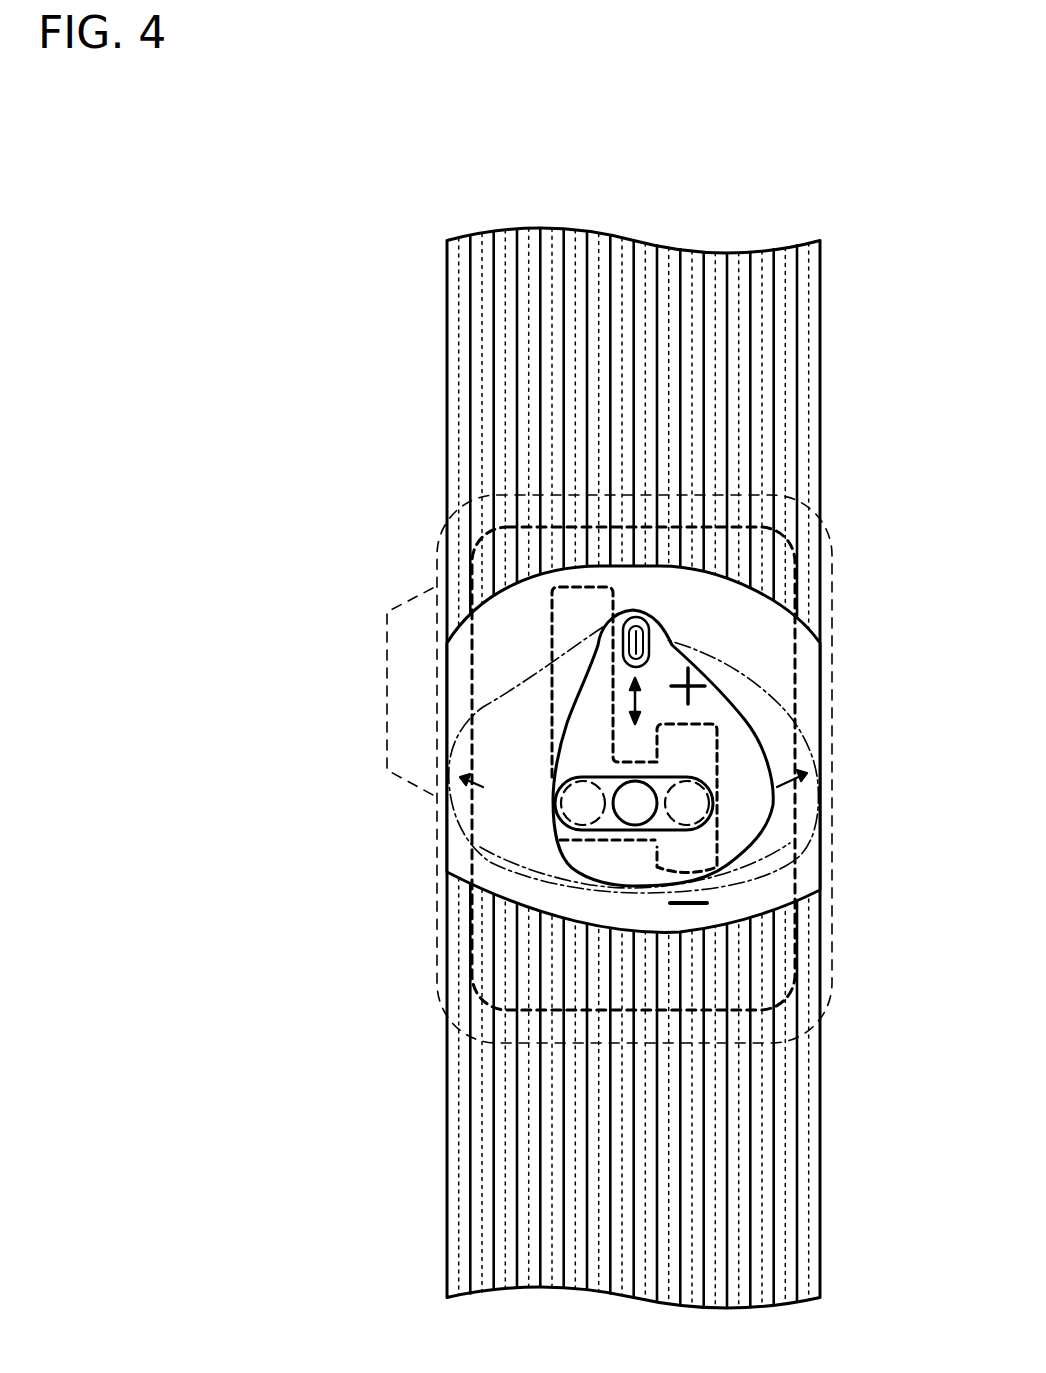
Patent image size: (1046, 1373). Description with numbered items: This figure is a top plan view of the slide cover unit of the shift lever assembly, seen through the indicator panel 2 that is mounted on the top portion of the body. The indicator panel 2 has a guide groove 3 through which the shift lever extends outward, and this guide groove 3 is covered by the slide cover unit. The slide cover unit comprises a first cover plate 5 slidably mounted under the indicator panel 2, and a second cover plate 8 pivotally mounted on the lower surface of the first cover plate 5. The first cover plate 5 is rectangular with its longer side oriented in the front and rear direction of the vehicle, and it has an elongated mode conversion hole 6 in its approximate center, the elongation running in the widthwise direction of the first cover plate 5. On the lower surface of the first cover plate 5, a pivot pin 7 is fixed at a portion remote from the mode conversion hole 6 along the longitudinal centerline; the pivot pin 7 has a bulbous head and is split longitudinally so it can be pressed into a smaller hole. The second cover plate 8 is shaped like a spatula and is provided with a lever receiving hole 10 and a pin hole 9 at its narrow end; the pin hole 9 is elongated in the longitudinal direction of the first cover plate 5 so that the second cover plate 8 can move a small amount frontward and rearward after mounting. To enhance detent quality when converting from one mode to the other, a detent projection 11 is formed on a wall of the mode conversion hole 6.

The indicator panel 2 is at (780, 997).
The guide groove 3 is at (572, 605).
The first cover plate 5 is at (808, 368).
The mode conversion hole 6 is at (640, 790).
The pivot pin 7 is at (650, 637).
The second cover plate 8 is at (748, 787).
The pin hole 9 is at (647, 622).
The lever receiving hole 10 is at (640, 805).
The detent projection 11 is at (640, 783).